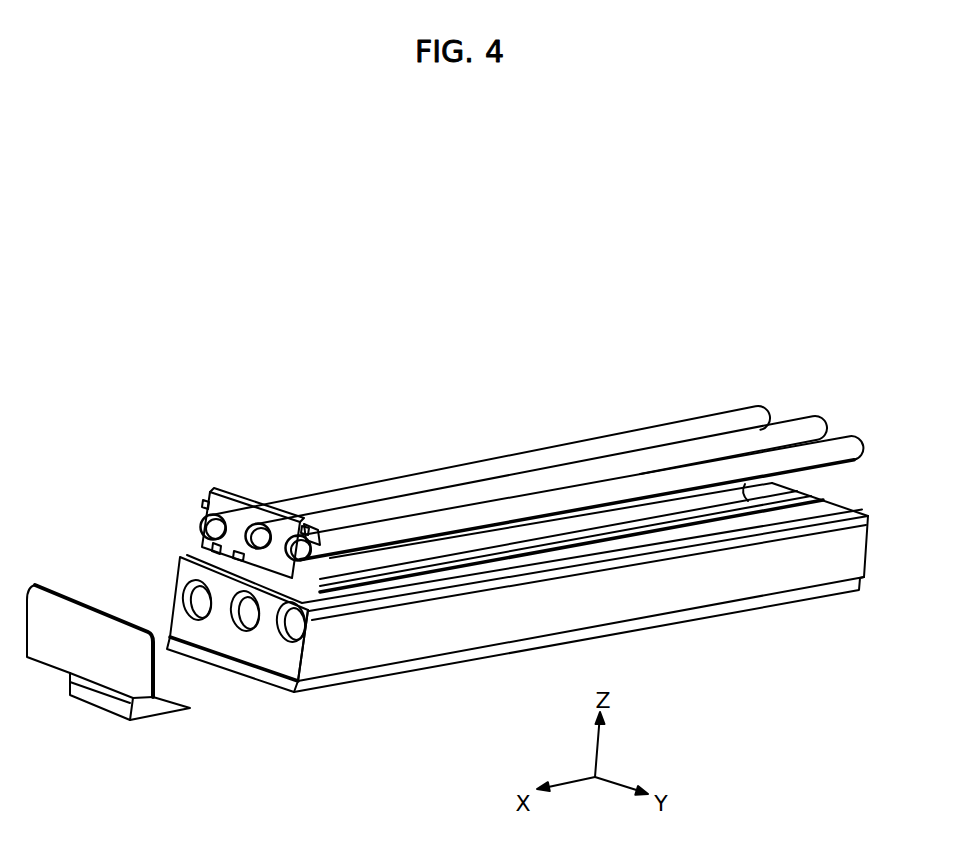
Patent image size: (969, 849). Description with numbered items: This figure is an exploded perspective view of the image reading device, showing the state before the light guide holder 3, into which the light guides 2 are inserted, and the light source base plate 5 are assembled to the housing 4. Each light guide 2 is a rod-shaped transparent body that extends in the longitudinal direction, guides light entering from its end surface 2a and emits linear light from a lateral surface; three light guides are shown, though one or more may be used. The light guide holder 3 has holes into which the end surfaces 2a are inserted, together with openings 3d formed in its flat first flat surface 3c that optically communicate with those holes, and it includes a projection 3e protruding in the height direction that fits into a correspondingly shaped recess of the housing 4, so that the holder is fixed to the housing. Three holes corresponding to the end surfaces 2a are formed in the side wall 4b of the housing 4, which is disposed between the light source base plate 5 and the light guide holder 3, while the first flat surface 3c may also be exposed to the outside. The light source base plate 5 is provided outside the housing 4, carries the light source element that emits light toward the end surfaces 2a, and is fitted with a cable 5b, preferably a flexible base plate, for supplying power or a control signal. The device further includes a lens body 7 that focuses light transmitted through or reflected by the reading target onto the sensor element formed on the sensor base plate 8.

The light guide 2 is at (718, 415).
The end surface 2a is at (302, 562).
The light guide holder 3 is at (213, 512).
The first flat surface 3c is at (298, 520).
The opening 3d is at (207, 507).
The projection 3e is at (213, 546).
The housing 4 is at (713, 580).
The side wall 4b is at (280, 655).
The light source base plate 5 is at (50, 626).
The cable 5b is at (147, 705).
The lens body 7 is at (803, 510).
The sensor base plate 8 is at (823, 586).